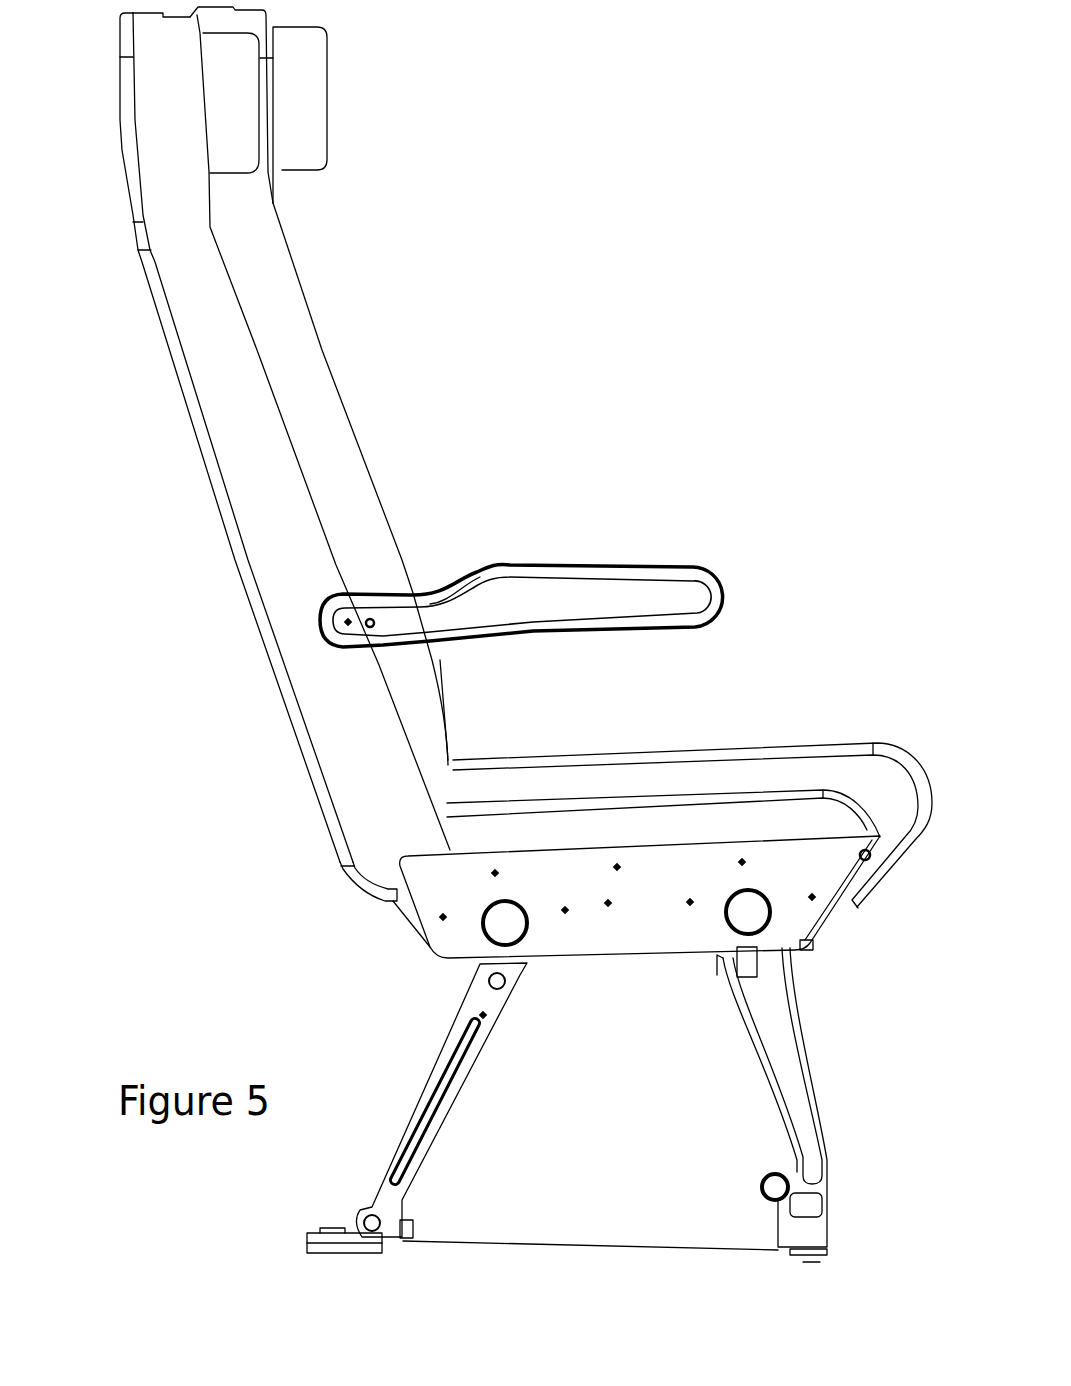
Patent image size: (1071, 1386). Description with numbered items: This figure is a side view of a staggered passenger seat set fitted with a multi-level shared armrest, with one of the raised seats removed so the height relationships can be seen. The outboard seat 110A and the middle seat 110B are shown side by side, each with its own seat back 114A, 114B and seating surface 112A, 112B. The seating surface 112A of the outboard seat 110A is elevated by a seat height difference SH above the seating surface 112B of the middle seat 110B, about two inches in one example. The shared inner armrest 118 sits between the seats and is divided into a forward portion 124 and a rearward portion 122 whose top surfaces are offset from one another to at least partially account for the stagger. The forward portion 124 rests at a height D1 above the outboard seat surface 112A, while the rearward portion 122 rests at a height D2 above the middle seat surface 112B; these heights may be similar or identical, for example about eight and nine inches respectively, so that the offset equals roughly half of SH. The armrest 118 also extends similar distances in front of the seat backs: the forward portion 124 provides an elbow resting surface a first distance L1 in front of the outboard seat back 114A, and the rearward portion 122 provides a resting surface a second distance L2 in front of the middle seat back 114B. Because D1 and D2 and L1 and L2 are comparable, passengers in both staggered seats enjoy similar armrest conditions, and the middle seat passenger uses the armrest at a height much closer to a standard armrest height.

The outboard seat 110A is at (325, 428).
The middle seat 110B is at (203, 332).
The outboard seat back 114A is at (338, 380).
The middle seat back 114B is at (298, 468).
The inner armrest 118 is at (451, 549).
The rearward portion of the shared armrest 122 is at (350, 591).
The forward portion of the shared armrest 124 is at (520, 564).
The seating surface of the outboard seat 112A is at (680, 755).
The seating surface of the middle seat 112B is at (743, 790).
The seat height difference SH is at (787, 765).
The first distance L1 is at (510, 552).
The second distance L2 is at (425, 583).
The height of the forward armrest portion D1 is at (510, 568).
The height of the rearward armrest portion D2 is at (425, 607).